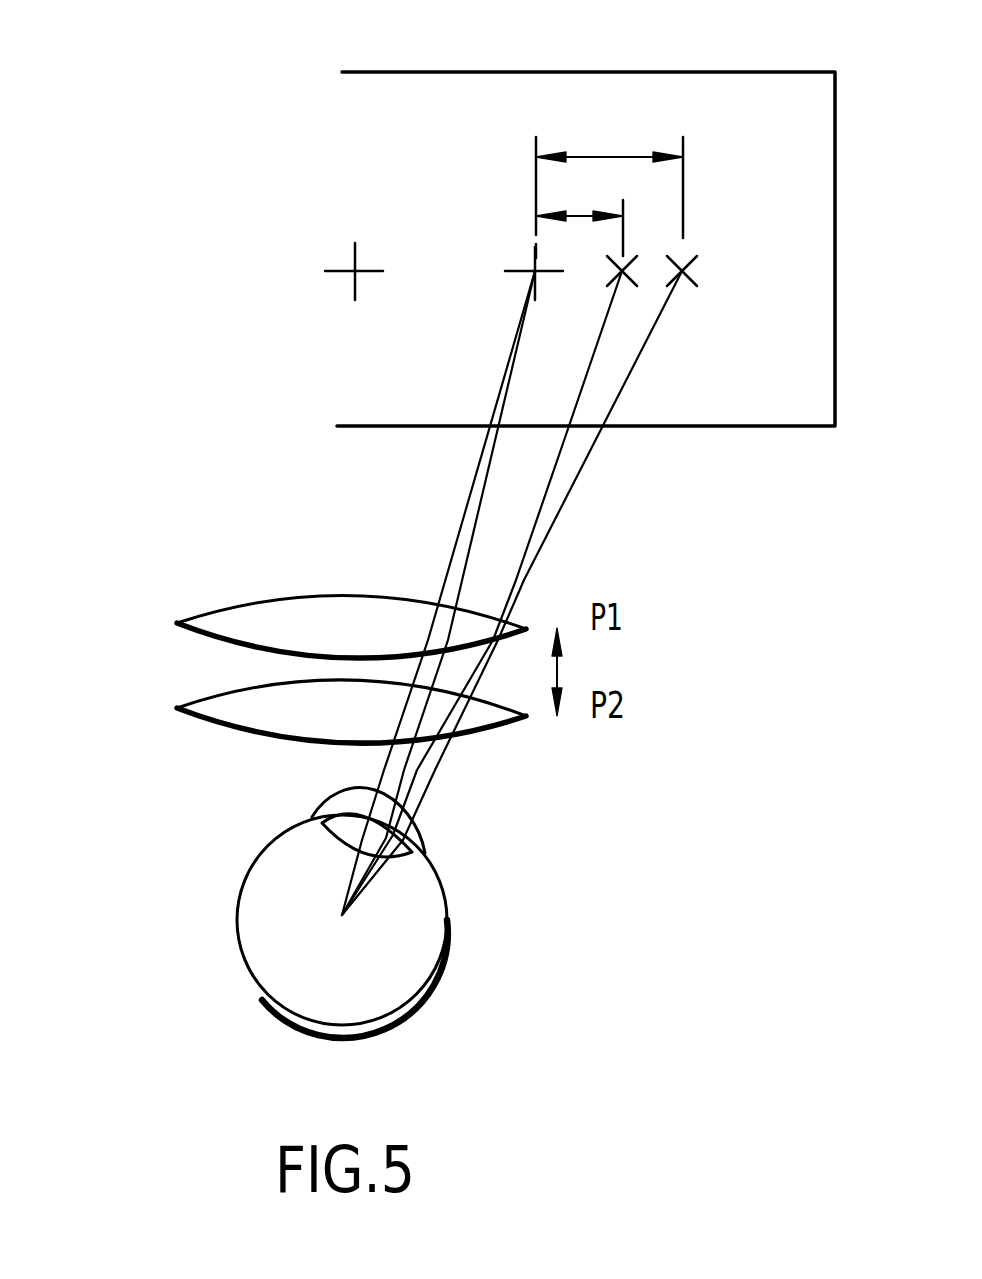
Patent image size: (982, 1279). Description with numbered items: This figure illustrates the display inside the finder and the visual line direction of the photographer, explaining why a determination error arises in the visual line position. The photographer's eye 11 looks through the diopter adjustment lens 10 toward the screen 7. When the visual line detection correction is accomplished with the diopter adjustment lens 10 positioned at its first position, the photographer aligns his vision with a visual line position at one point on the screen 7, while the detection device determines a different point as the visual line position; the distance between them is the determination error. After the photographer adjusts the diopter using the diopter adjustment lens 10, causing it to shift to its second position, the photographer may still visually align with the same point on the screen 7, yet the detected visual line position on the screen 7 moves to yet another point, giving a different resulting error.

The screen 7 is at (812, 72).
The diopter adjustment lens 10 is at (163, 620).
The eye of observer 11 is at (433, 973).